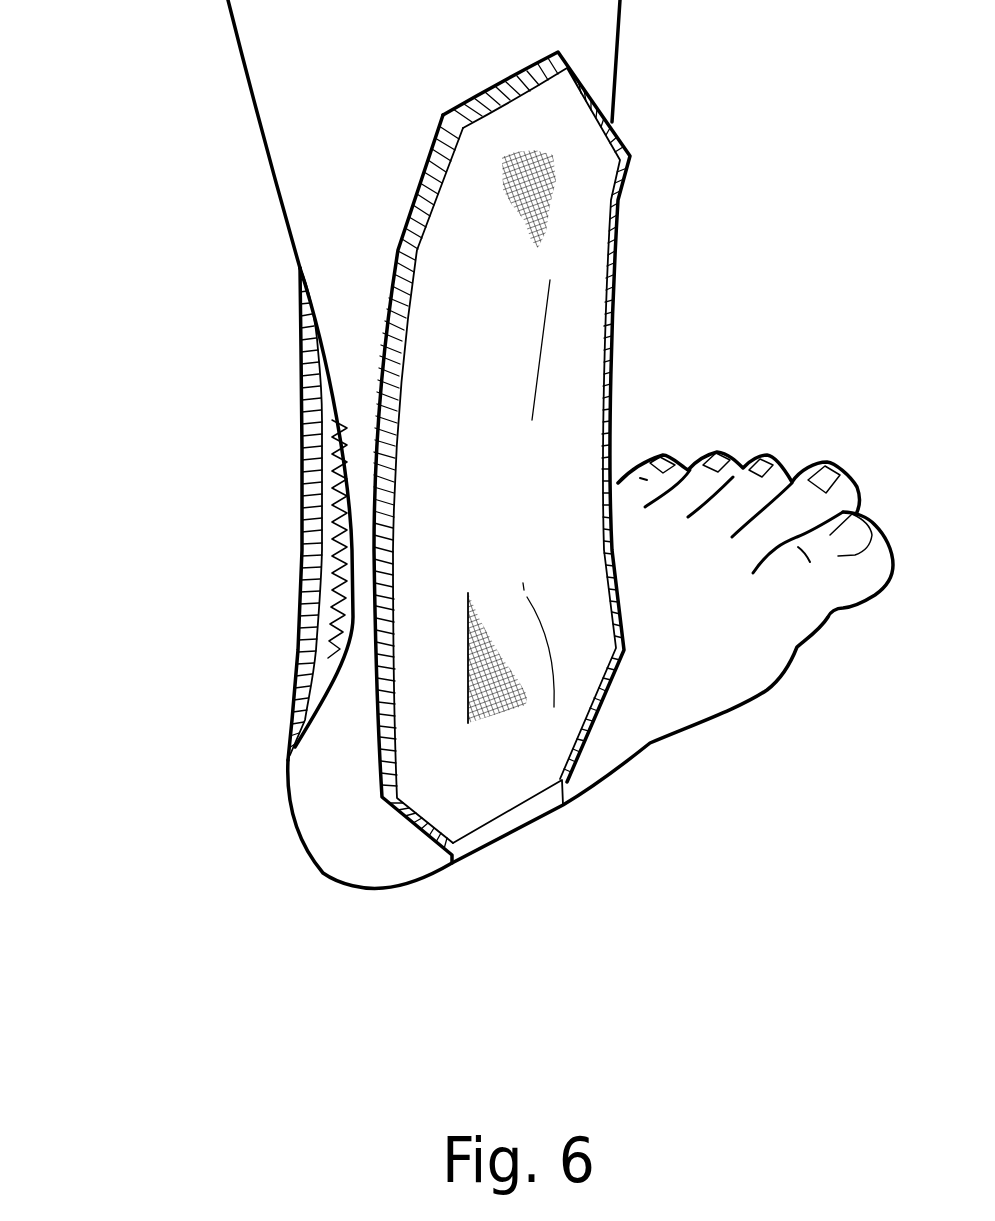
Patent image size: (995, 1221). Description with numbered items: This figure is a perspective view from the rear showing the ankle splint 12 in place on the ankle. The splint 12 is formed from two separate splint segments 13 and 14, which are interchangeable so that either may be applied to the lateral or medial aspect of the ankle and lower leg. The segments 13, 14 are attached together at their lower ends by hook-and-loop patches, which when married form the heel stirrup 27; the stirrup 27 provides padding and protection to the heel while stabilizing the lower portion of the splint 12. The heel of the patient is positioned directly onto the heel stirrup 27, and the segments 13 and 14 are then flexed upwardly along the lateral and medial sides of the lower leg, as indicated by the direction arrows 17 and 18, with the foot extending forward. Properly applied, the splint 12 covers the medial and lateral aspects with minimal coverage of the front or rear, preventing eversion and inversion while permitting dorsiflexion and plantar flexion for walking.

The ankle splint 12 is at (249, 392).
The first splint segment 13 is at (300, 620).
The second splint segment 14 is at (593, 338).
The leg 17 is at (212, 524).
The foot 18 is at (707, 670).
The heel stirrup 27 is at (512, 827).